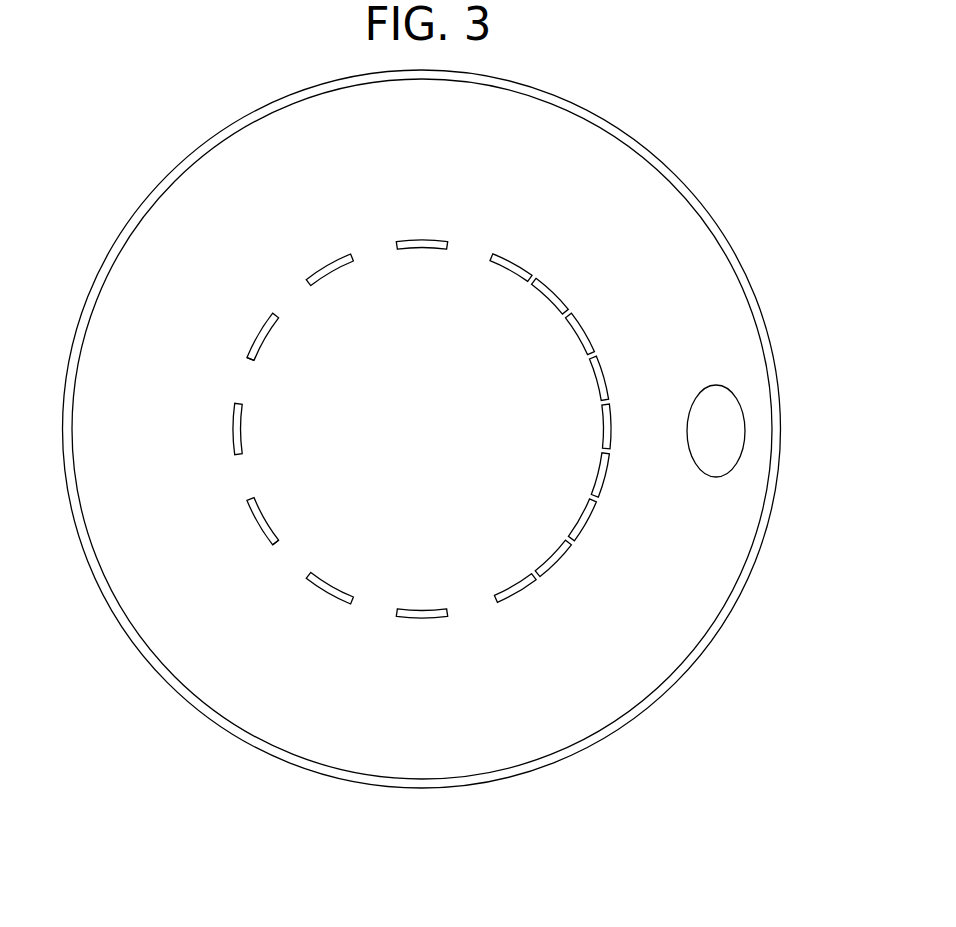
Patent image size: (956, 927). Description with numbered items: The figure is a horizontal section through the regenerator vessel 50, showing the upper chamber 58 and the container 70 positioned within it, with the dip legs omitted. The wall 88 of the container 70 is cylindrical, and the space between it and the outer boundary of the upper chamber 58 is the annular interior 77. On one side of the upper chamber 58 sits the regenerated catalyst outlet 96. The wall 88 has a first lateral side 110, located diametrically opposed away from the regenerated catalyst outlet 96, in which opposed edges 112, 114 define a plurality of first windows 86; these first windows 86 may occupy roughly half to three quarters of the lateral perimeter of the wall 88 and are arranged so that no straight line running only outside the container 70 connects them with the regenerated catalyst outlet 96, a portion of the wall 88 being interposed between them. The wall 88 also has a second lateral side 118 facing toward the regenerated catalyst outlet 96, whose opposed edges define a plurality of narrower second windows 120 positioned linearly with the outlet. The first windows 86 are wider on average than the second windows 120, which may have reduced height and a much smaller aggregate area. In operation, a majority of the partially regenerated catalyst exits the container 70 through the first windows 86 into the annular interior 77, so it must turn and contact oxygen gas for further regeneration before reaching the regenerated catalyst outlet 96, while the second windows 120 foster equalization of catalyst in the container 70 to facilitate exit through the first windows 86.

The regenerator vessel 50 is at (137, 685).
The upper chamber 58 is at (643, 105).
The container 70 is at (455, 205).
The annular interior 77 is at (491, 688).
The first window 86 is at (241, 368).
The wall 88 is at (330, 247).
The regenerated catalyst outlet 96 is at (723, 385).
The first lateral side 110 is at (228, 422).
The opposed edge 112 is at (250, 360).
The opposed edge 114 is at (236, 403).
The second lateral side 118 is at (648, 358).
The second window 120 is at (598, 358).